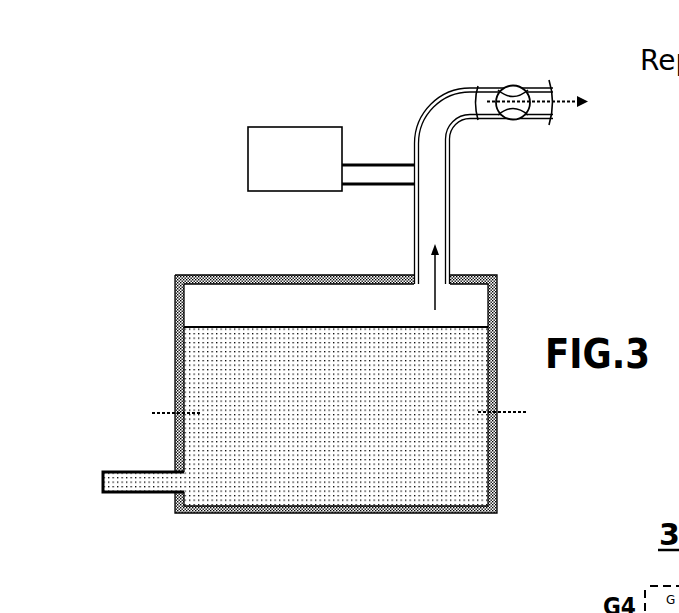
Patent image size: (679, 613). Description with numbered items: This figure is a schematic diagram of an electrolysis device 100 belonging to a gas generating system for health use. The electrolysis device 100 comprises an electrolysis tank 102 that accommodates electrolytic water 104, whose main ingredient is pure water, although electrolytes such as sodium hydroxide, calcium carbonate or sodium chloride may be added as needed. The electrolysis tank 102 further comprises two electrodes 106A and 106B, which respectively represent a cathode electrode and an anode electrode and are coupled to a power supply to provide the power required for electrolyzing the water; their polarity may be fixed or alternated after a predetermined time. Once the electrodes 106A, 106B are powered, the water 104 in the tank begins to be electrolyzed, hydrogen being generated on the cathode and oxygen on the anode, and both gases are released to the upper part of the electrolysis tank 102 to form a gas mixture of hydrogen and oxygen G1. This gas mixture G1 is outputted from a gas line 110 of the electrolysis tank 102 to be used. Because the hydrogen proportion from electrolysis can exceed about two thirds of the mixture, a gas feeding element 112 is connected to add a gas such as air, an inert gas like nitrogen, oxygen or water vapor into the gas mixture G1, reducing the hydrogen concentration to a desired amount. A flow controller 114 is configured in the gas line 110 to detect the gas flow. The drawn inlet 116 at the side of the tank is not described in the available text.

The electrolysis device 100 is at (168, 132).
The electrolysis tank 102 is at (251, 276).
The electrolytic water 104 is at (358, 507).
The electrode 106A is at (213, 507).
The electrode 106B is at (483, 513).
The gas line 110 is at (470, 89).
The gas feeding element 112 is at (250, 127).
The flow controller 114 is at (515, 86).
The inlet pipe 116 is at (150, 472).
The gas mixture of hydrogen and oxygen G1 is at (572, 100).